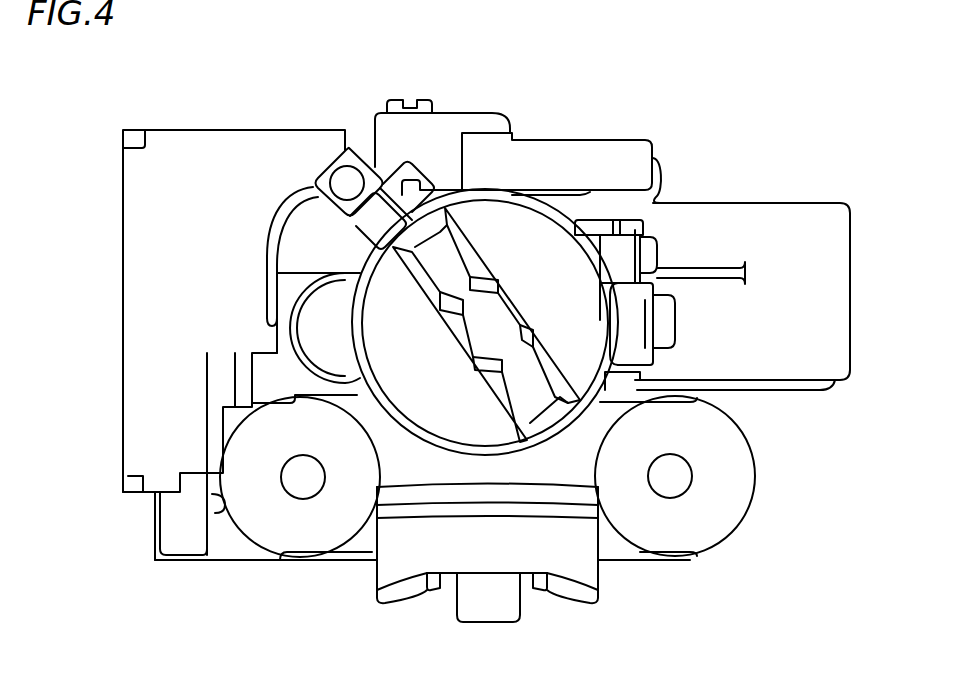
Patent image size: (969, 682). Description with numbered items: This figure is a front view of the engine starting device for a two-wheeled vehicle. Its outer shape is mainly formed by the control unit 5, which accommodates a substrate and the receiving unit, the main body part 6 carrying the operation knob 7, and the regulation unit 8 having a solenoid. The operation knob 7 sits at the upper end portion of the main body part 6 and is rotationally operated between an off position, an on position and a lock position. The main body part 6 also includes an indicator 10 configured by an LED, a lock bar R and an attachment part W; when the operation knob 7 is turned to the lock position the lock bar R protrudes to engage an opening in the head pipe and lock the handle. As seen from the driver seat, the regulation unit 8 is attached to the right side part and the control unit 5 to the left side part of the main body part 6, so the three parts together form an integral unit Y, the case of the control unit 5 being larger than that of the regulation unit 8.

The control unit 5 is at (206, 143).
The main body part 6 is at (632, 141).
The operation knob 7 is at (524, 221).
The regulation unit 8 is at (744, 212).
The indicator 10 is at (340, 160).
The attachment part W is at (240, 549).
The lock bar R is at (488, 613).
The integral unit Y is at (762, 562).